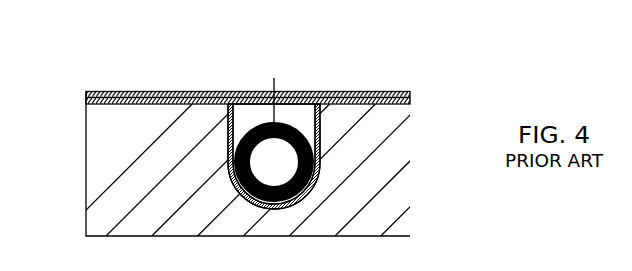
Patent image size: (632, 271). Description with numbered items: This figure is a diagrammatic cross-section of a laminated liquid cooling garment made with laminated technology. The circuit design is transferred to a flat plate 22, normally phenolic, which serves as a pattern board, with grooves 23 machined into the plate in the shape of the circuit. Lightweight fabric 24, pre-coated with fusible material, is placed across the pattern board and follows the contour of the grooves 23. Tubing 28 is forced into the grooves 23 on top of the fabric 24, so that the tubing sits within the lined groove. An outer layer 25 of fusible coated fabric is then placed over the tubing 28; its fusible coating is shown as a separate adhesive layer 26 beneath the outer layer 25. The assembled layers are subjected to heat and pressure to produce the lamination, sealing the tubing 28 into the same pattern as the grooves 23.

The flat plate 22 is at (281, 164).
The grooves 23 is at (243, 120).
The lightweight fabric 24 is at (185, 156).
The outer layer 25 is at (115, 91).
The adhesive layer 26 is at (87, 99).
The tubing 28 is at (283, 120).